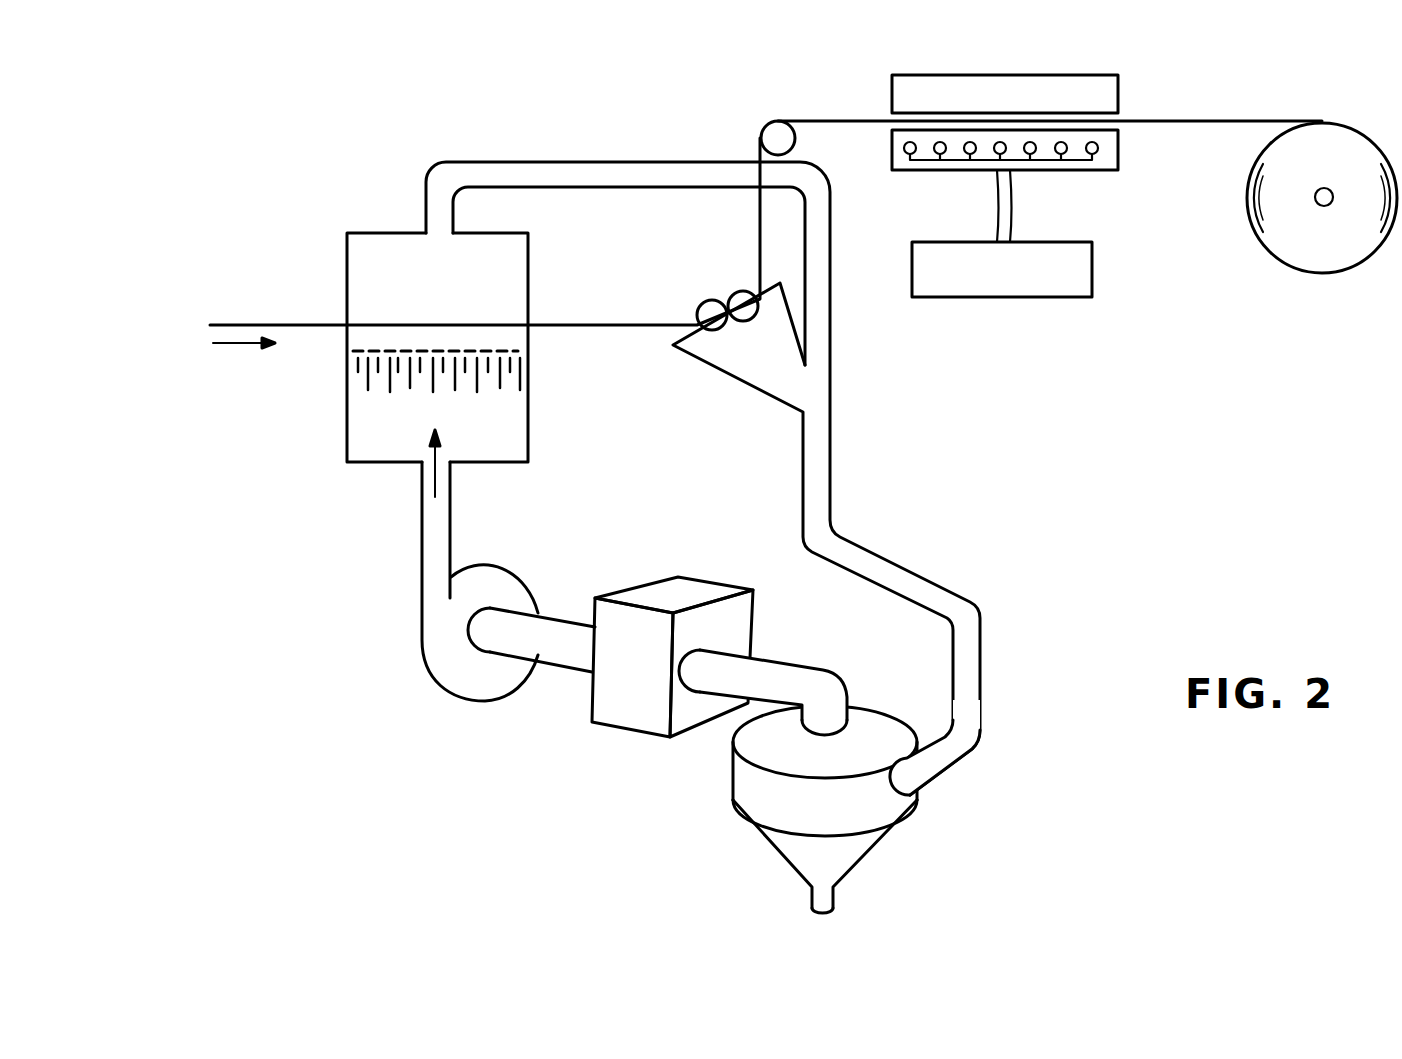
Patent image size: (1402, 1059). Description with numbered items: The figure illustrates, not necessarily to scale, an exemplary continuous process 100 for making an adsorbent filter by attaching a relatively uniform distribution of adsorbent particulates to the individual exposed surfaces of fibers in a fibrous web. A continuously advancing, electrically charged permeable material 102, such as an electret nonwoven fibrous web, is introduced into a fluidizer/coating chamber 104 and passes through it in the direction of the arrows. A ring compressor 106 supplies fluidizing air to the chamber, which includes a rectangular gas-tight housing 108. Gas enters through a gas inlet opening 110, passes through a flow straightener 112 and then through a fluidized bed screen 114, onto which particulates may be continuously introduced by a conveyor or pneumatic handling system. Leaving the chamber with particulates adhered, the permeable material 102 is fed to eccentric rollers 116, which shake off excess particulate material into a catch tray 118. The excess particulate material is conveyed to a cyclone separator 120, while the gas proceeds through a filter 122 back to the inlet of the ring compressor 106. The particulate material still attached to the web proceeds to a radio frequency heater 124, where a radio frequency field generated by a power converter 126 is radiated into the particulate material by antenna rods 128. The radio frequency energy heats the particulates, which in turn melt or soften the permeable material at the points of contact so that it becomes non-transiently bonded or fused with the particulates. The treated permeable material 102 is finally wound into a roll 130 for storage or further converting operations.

The continuous process 100 is at (1285, 497).
The electrically charged permeable material 102 is at (258, 325).
The fluidizer/coating chamber 104 is at (315, 507).
The ring compressor 106 is at (445, 697).
The rectangular gas-tight housing 108 is at (373, 233).
The gas inlet opening 110 is at (452, 483).
The flow straightener 112 is at (528, 374).
The fluidized bed screen 114 is at (508, 343).
The eccentric rollers 116 is at (713, 277).
The catch tray 118 is at (750, 365).
The cyclone separator 120 is at (840, 817).
The filter 122 is at (660, 682).
The radio frequency heater 124 is at (1155, 86).
The power converter 126 is at (1026, 284).
The antenna rods 128 is at (1030, 160).
The roll 130 is at (1262, 250).